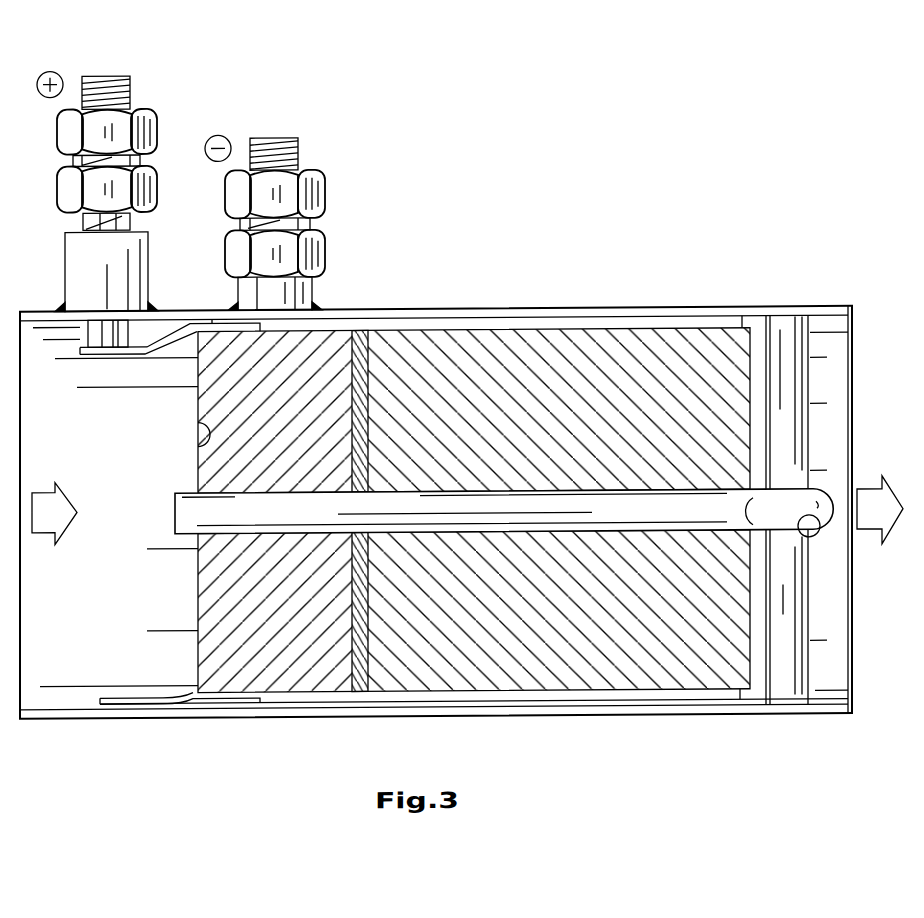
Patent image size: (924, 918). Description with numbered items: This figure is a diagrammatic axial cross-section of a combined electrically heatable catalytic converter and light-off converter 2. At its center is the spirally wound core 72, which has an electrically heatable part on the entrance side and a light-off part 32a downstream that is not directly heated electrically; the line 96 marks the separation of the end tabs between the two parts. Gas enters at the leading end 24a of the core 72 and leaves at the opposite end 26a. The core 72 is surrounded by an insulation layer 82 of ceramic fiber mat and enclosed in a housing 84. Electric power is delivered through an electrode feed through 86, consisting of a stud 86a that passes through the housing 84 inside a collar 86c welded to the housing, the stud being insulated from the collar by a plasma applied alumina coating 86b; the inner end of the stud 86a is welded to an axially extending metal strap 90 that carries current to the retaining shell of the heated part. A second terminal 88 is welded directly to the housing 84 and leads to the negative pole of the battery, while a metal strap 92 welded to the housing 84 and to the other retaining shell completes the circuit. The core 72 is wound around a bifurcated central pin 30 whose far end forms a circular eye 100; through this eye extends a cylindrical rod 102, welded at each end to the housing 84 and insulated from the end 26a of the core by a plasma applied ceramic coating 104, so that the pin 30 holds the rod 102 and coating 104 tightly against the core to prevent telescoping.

The housing 2 is at (451, 512).
The leading end of the core 24a is at (199, 450).
The end of the core 26a is at (742, 363).
The central pin 30 is at (178, 518).
The light-off part of the core 32a is at (558, 637).
The core 72 is at (473, 516).
The insulation layer 82 is at (603, 326).
The housing 84 is at (372, 312).
The electrode feed through 86 is at (126, 191).
The stud 86a is at (100, 77).
The plasma applied coating of alumina 86b is at (83, 228).
The collar 86c is at (133, 285).
The terminal 88 is at (329, 152).
The metal strap 90 is at (118, 351).
The metal strap 92 is at (174, 700).
The line of separation 96 is at (352, 393).
The eye 100 is at (809, 542).
The cylindrical rod 102 is at (798, 429).
The plasma applied ceramic coating 104 is at (758, 394).